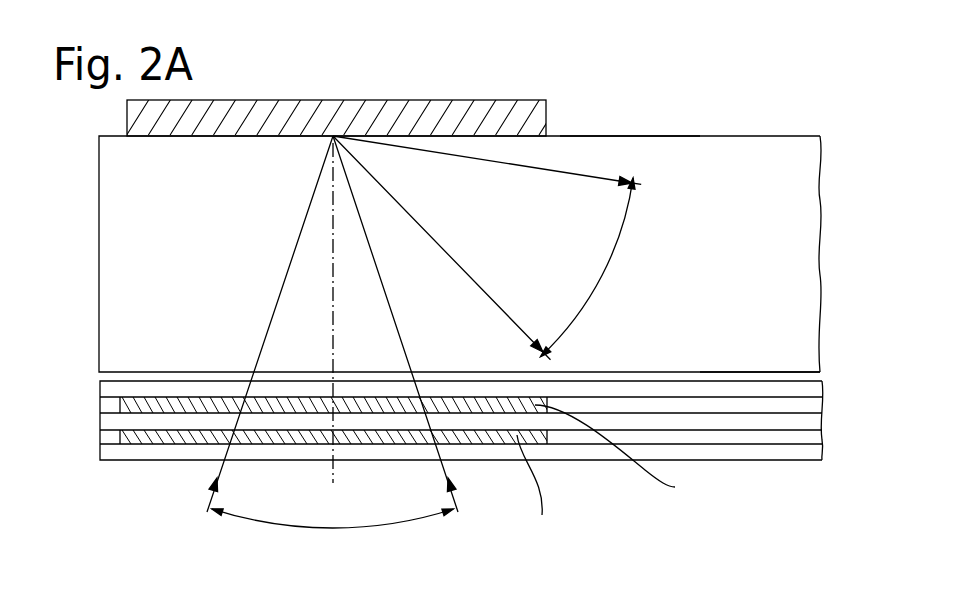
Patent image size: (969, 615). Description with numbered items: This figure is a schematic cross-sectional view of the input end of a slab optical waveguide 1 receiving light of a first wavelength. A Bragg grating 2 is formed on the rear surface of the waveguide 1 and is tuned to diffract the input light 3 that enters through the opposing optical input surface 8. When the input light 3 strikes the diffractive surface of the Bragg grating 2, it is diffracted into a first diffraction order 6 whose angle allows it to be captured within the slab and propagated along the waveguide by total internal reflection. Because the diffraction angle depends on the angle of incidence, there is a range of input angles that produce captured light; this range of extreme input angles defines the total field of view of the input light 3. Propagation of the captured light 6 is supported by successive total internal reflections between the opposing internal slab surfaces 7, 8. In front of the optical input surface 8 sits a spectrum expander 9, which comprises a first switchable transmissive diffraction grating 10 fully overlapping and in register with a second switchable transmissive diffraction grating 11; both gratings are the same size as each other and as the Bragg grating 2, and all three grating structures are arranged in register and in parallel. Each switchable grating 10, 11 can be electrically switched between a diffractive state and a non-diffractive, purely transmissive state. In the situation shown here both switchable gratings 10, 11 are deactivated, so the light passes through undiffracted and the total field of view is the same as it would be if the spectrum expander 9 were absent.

The optical waveguide 1 is at (727, 157).
The Bragg grating 2 is at (267, 118).
The input light 3 is at (243, 517).
The first diffraction order 6 is at (607, 290).
The internal slab surface 7 is at (652, 136).
The optical input surface 8 is at (772, 372).
The spectrum expander 9 is at (133, 452).
The first switchable transmissive diffraction grating 10 is at (133, 437).
The second switchable transmissive diffraction grating 11 is at (133, 403).